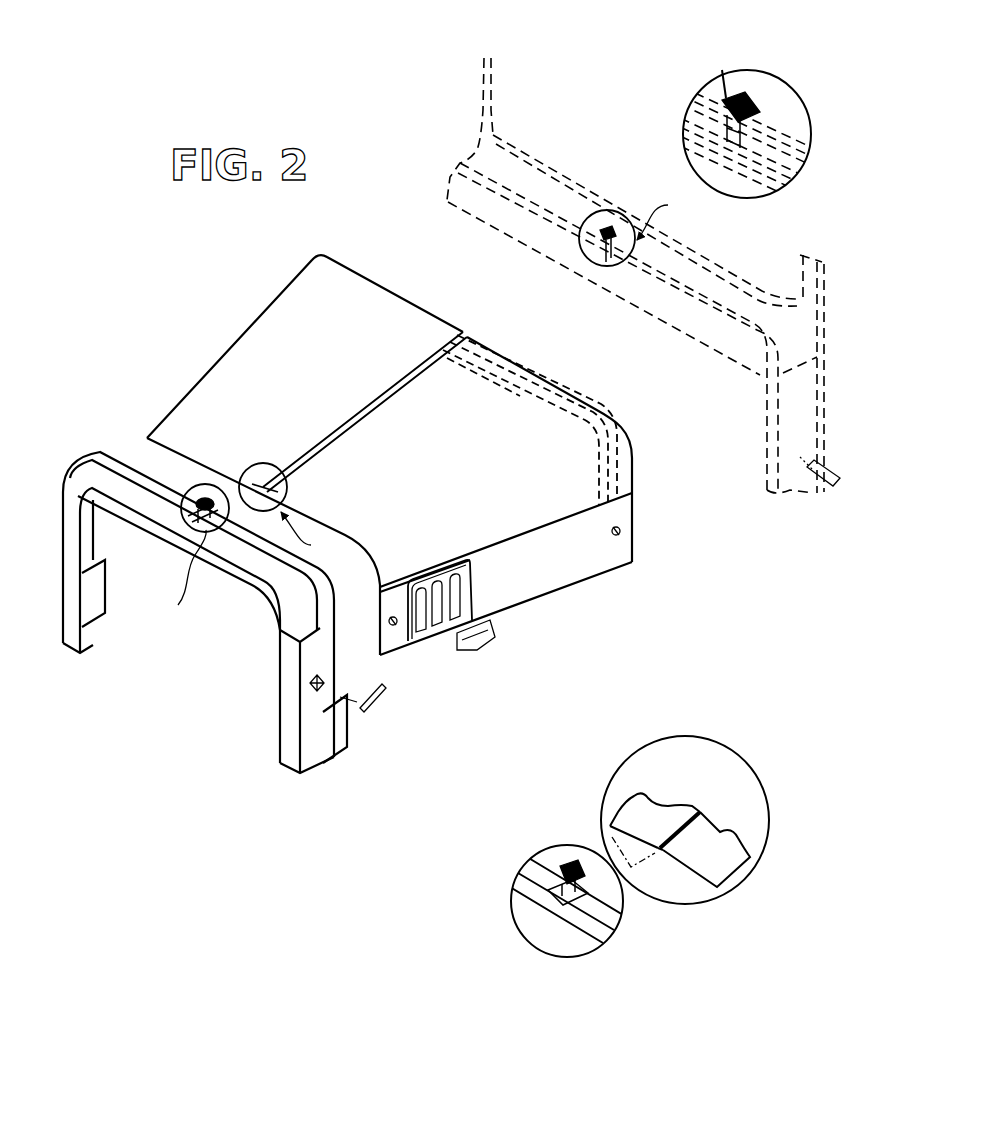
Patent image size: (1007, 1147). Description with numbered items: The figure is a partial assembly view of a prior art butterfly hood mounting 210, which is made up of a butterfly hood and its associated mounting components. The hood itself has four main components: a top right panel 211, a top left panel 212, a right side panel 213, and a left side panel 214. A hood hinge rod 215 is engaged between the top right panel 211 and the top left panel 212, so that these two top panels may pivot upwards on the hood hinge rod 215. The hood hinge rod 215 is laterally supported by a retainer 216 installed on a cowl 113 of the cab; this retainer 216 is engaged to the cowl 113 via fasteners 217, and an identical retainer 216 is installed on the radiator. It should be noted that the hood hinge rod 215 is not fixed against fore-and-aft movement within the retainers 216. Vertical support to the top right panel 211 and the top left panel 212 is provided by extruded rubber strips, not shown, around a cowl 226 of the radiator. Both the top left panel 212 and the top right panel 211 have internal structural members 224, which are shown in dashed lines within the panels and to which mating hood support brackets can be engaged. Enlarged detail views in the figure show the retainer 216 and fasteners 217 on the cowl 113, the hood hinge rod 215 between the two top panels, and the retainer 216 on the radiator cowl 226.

The cowl 113 is at (795, 330).
The butterfly hood mounting 210 is at (572, 729).
The top right panel 211 is at (248, 332).
The top left panel 212 is at (597, 407).
The right side panel 213 is at (170, 463).
The left side panel 214 is at (637, 516).
The hood hinge rod 215 is at (612, 824).
The retainer 216 is at (572, 895).
The fasteners 217 is at (748, 88).
The internal structural members 224 is at (542, 392).
The cowl of the radiator 226 is at (227, 592).